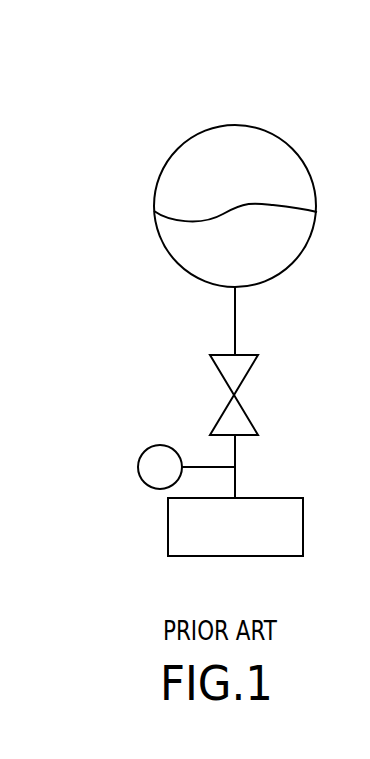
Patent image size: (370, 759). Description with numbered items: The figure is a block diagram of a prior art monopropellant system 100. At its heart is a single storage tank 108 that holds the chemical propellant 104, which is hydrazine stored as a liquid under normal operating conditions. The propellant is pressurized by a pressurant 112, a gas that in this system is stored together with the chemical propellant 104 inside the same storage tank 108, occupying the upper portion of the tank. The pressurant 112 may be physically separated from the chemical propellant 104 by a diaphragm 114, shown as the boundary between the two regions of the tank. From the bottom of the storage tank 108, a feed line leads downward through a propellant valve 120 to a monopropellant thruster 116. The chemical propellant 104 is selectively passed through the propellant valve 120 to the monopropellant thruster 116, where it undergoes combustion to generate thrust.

The monopropellant system 100 is at (141, 311).
The chemical propellant 104 is at (177, 253).
The storage tank 108 is at (168, 160).
The pressurant 112 is at (245, 133).
The diaphragm 114 is at (168, 218).
The monopropellant thruster 116 is at (168, 531).
The propellant valve 120 is at (243, 377).